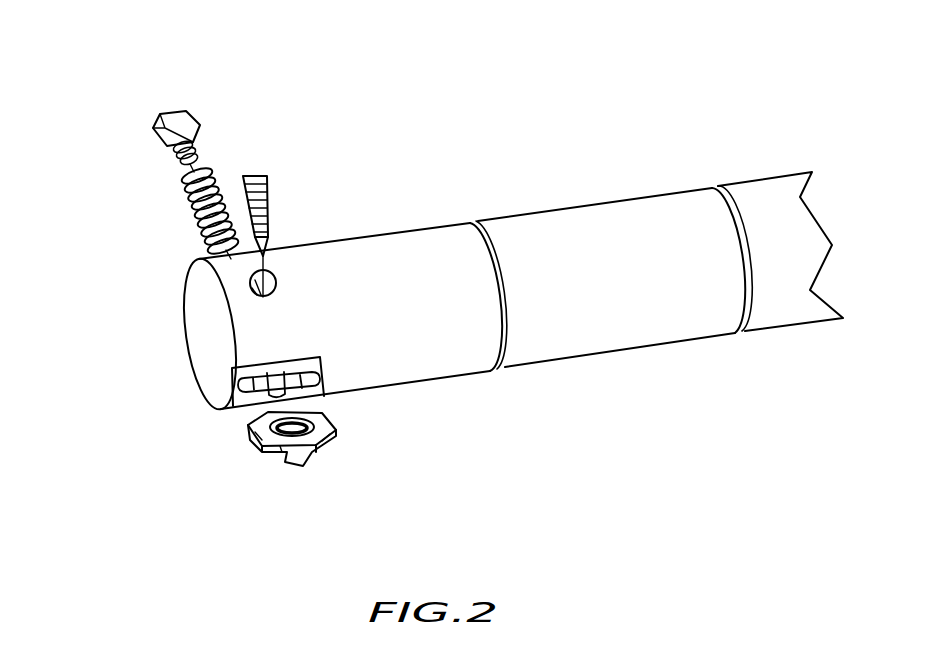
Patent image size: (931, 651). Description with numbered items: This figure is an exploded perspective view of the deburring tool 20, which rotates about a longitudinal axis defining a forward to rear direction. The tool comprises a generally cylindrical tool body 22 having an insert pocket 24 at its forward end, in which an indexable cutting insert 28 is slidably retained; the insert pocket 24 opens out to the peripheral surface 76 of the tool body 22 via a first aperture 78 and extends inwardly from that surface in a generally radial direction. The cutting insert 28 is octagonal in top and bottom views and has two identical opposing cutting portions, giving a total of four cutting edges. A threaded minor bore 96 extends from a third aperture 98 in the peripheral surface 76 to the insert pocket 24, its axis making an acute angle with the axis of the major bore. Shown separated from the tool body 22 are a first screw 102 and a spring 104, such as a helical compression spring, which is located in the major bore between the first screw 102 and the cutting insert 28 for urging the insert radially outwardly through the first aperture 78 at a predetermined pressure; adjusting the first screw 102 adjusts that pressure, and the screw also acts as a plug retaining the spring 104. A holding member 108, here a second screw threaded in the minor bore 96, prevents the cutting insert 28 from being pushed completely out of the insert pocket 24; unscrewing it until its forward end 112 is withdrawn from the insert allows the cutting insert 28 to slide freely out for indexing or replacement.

The deburring tool 20 is at (646, 104).
The tool body 22 is at (693, 313).
The insert pocket 24 is at (312, 394).
The cutting insert 28 is at (292, 499).
The peripheral surface 76 is at (387, 262).
The first aperture 78 is at (247, 389).
The minor bore 96 is at (256, 294).
The third aperture 98 is at (250, 278).
The first screw 102 is at (175, 120).
The spring 104 is at (185, 207).
The holding member 108 is at (268, 180).
The forward end 112 is at (267, 237).